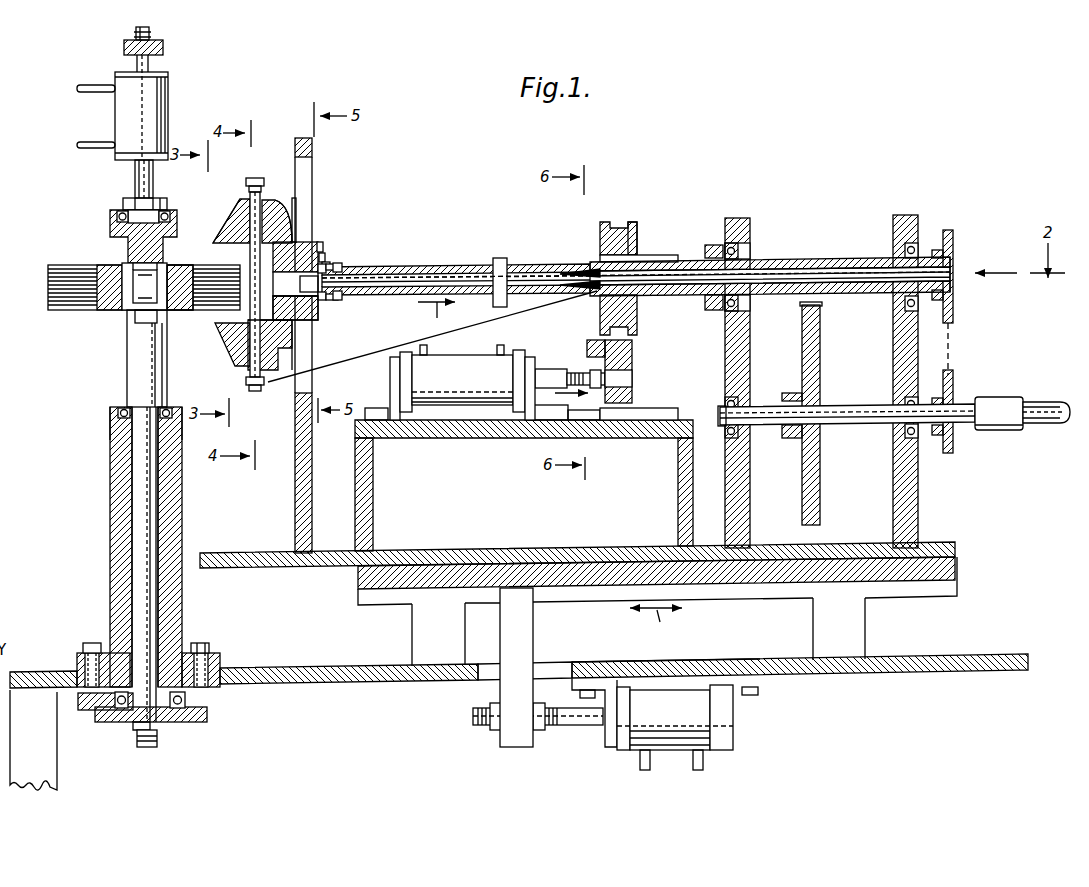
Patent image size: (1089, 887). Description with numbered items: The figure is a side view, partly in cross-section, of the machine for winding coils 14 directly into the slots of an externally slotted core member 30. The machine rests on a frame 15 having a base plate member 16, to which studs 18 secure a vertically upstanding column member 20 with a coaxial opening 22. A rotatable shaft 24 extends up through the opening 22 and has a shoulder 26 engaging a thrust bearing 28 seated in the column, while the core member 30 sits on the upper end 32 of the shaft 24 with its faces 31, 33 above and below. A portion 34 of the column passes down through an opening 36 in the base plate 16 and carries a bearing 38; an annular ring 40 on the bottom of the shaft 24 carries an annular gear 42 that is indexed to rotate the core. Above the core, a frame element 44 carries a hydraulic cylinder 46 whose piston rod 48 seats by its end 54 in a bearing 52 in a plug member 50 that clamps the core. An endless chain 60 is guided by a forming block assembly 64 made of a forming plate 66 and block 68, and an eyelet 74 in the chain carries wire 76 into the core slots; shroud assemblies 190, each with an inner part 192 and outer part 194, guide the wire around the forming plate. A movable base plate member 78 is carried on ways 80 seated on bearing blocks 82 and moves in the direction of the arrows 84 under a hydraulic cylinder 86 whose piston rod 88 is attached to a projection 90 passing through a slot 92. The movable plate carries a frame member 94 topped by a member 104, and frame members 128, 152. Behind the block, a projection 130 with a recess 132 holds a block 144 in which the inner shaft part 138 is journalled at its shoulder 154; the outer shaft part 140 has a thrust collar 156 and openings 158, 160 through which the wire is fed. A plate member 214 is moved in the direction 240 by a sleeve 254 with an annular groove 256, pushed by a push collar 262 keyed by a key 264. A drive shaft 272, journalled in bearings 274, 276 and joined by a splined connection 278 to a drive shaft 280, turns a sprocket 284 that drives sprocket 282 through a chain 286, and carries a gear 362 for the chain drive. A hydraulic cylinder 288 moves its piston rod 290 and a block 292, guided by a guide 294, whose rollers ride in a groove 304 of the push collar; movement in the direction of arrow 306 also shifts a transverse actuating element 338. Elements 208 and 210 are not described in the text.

The machine for winding coils 14 is at (725, 185).
The frame 15 is at (60, 758).
The base plate member 16 is at (328, 672).
The studs 18 is at (203, 643).
The column member 20 is at (110, 528).
The coaxial opening 22 is at (132, 568).
The rotatable shaft 24 is at (144, 492).
The shoulder 26 is at (127, 407).
The thrust bearing 28 is at (113, 425).
The core member 30 is at (104, 313).
The face of core 31 is at (173, 312).
The upper end of shaft 32 is at (145, 324).
The face of core 33 is at (167, 264).
The portion of column 34 is at (128, 705).
The opening in base plate 36 is at (178, 685).
The bearing 38 is at (176, 708).
The annular ring 40 is at (118, 723).
The annular gear 42 is at (88, 712).
The frame element 44 is at (163, 48).
The hydraulic cylinder 46 is at (168, 90).
The piston rod 48 is at (153, 175).
The plug member 50 is at (110, 226).
The bearing 52 is at (120, 211).
The end of piston rod 54 is at (167, 204).
The endless chain 60 is at (257, 181).
The forming block assembly 64 is at (298, 228).
The forming plate 66 is at (268, 200).
The block 68 is at (305, 242).
The eyelet 74 is at (265, 392).
The wire 76 is at (383, 349).
The movable base plate member 78 is at (937, 542).
The ways 80 is at (958, 560).
The bearing blocks 82 is at (412, 628).
The arrows 84 is at (656, 624).
The hydraulic cylinder 86 is at (673, 750).
The piston rod 88 is at (582, 726).
The projection 90 is at (533, 628).
The slot 92 is at (600, 660).
The frame member 94 is at (295, 500).
The member 104 is at (302, 138).
The frame member 128 is at (750, 236).
The projection 130 is at (320, 243).
The recess 132 is at (322, 256).
The shaft part 138 is at (522, 268).
The shaft part 140 is at (817, 262).
The block 144 is at (326, 263).
The frame member 152 is at (893, 481).
The shoulder 154 is at (328, 298).
The thrust collar 156 is at (708, 243).
The coaxial opening 158 is at (842, 273).
The opening 160 is at (577, 295).
The shroud assemblies 190 is at (226, 214).
The inner part 192 is at (243, 213).
The outer part 194 is at (222, 223).
The gear body 208 is at (267, 315).
The spacer 210 is at (300, 229).
The plate member 214 is at (282, 292).
The direction 240 is at (436, 318).
The sleeve 254 is at (437, 265).
The annular groove 256 is at (338, 270).
The push collar 262 is at (638, 233).
The key 264 is at (657, 258).
The drive shaft 272 is at (852, 407).
The bearing 274 is at (748, 396).
The bearing 276 is at (897, 431).
The splined connection 278 is at (990, 397).
The drive shaft 280 is at (1036, 402).
The sprocket 282 is at (953, 238).
The sprocket 284 is at (953, 445).
The chain 286 is at (953, 343).
The hydraulic cylinder 288 is at (463, 367).
The piston rod 290 is at (577, 366).
The block 292 is at (629, 353).
The guide 294 is at (661, 407).
The groove 304 is at (614, 222).
The arrow 306 is at (587, 393).
The transverse actuating element 338 is at (593, 340).
The gear 362 is at (820, 333).